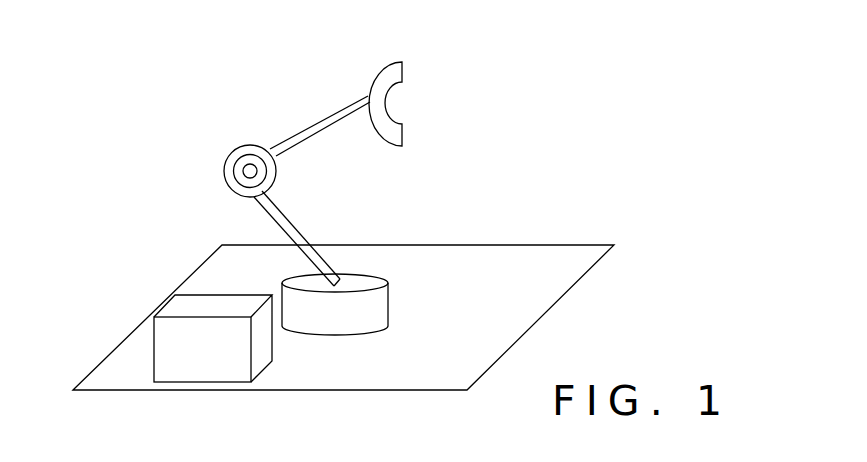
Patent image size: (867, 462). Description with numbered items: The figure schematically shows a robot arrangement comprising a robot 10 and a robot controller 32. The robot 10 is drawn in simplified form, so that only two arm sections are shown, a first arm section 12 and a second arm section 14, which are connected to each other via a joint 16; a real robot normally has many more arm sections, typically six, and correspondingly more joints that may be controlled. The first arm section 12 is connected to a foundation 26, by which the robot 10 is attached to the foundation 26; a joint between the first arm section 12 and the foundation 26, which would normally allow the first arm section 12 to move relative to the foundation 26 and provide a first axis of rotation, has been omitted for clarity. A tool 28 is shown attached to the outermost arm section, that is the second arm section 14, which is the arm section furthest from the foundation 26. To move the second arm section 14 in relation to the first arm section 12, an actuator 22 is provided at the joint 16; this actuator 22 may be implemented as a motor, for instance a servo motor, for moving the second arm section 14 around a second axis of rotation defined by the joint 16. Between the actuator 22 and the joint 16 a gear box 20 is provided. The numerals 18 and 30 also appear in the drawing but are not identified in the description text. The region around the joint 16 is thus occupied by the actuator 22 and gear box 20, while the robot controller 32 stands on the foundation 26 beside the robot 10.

The robot 10 is at (173, 204).
The first arm section 12 is at (290, 217).
The second arm section 14 is at (322, 122).
The joint 16 is at (232, 151).
The bearing ring 18 is at (238, 179).
The gear box 20 is at (278, 173).
The actuator 22 is at (243, 165).
The foundation 26 is at (388, 308).
The tool 28 is at (402, 68).
The base plate 30 is at (580, 273).
The robot controller 32 is at (272, 352).